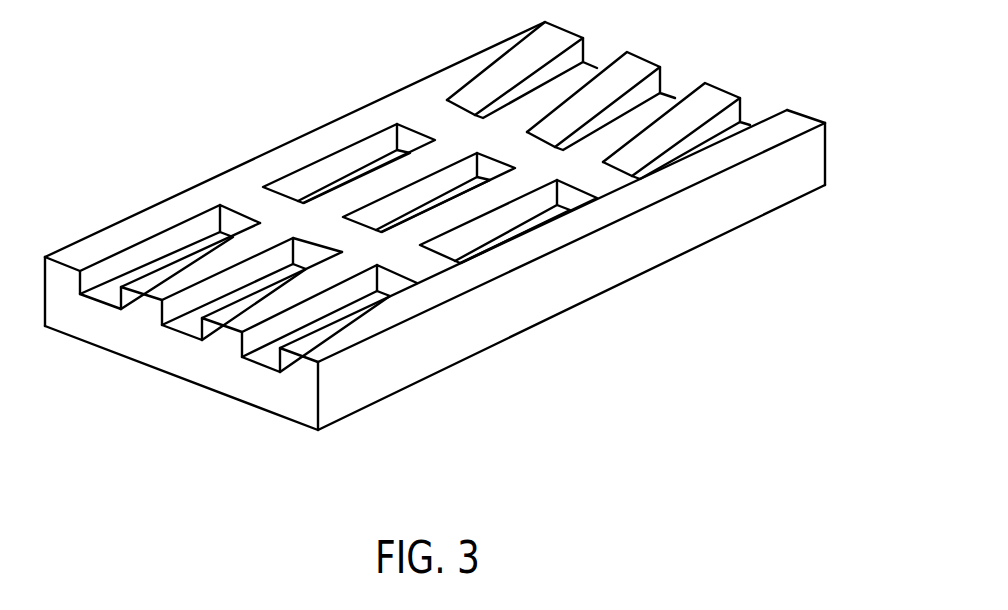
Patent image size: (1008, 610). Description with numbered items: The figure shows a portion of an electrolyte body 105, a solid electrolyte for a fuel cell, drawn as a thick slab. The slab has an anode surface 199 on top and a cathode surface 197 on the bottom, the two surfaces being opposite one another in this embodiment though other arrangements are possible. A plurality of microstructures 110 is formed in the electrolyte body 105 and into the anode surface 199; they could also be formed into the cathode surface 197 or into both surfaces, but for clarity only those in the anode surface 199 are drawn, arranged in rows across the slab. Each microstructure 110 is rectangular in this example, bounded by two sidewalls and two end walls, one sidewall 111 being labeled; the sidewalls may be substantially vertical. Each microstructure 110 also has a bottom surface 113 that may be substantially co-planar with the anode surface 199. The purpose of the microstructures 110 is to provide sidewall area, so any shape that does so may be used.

The electrolyte body 105 is at (580, 288).
The cathode surface 197 is at (223, 398).
The anode surface 199 is at (425, 108).
The microstructures 110 is at (598, 28).
The sidewall 111 is at (347, 167).
The bottom surface 113 is at (318, 190).